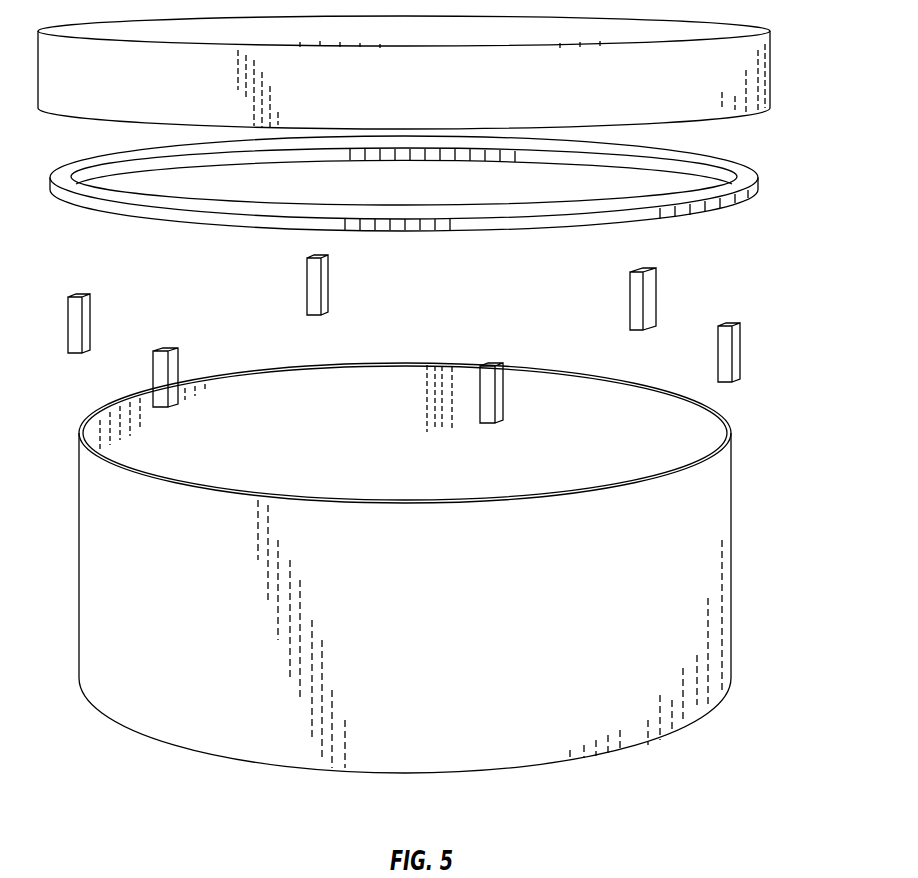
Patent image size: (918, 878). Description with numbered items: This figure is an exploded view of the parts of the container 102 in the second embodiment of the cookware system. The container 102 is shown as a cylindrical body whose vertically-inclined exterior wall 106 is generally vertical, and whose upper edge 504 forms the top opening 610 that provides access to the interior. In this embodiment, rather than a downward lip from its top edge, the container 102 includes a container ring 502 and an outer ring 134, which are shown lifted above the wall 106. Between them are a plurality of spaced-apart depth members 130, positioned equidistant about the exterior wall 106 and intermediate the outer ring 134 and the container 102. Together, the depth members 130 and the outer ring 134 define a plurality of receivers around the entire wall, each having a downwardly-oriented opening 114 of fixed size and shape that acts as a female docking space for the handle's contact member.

The container 102 is at (408, 552).
The vertically-inclined exterior wall 106 is at (722, 508).
The receiver downwardly-oriented opening 114 is at (683, 308).
The spaced-apart depth members 130 is at (439, 339).
The outer ring 134 is at (763, 47).
The container ring 502 is at (758, 190).
The upper edge 504 is at (728, 417).
The top opening 610 is at (354, 398).